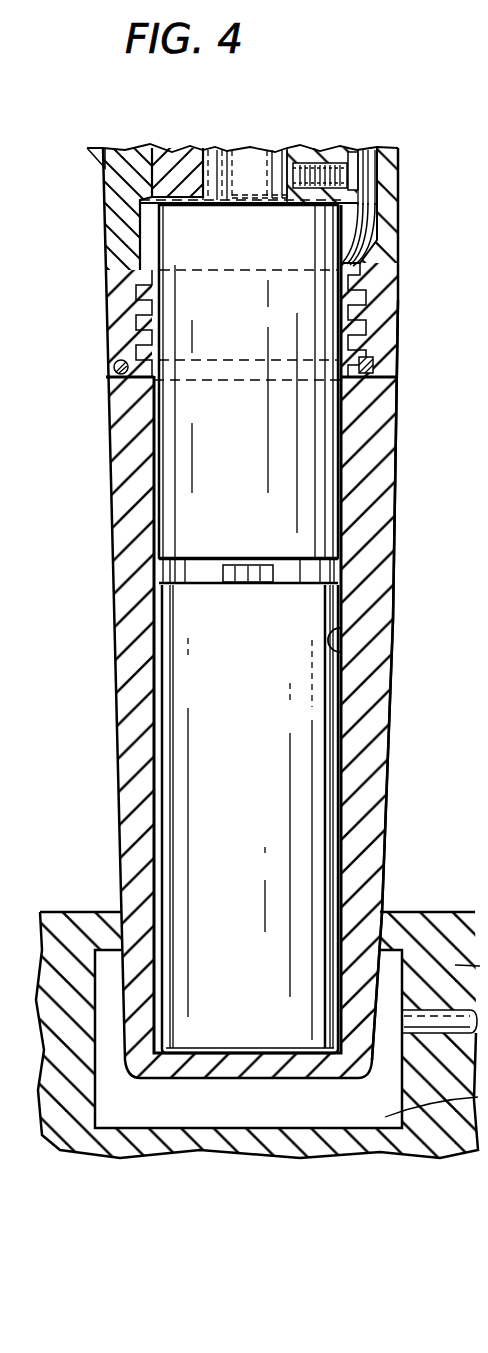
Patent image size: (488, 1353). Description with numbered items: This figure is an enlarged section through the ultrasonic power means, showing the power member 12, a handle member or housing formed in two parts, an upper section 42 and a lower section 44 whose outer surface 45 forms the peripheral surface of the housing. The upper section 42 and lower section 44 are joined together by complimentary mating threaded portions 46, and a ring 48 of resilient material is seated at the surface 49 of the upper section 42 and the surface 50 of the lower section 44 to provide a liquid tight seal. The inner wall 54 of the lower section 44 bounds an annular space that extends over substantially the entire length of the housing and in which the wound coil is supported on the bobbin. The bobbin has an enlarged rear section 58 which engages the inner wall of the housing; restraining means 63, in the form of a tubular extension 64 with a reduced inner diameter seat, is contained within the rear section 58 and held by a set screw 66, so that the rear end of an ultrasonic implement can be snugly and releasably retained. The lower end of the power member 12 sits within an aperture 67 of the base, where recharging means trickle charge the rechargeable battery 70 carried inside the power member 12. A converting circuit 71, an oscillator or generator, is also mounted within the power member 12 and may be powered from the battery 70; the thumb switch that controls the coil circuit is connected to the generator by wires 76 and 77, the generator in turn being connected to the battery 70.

The power member 12 is at (400, 182).
The upper section 42 is at (385, 237).
The lower section 44 is at (375, 495).
The outer surface 45 is at (393, 548).
The mating threaded portions 46 is at (373, 313).
The ring 48 is at (377, 359).
The surface 49 is at (118, 362).
The surface 50 is at (397, 374).
The inner wall 54 is at (323, 653).
The rear section 58 is at (177, 148).
The restraining means 63 is at (232, 146).
The tubular extension 64 is at (272, 156).
The set screw 66 is at (313, 172).
The aperture 67 is at (121, 908).
The battery 70 is at (318, 775).
The converting circuit 71 is at (324, 449).
The wire 76 is at (367, 150).
The wire 77 is at (370, 150).